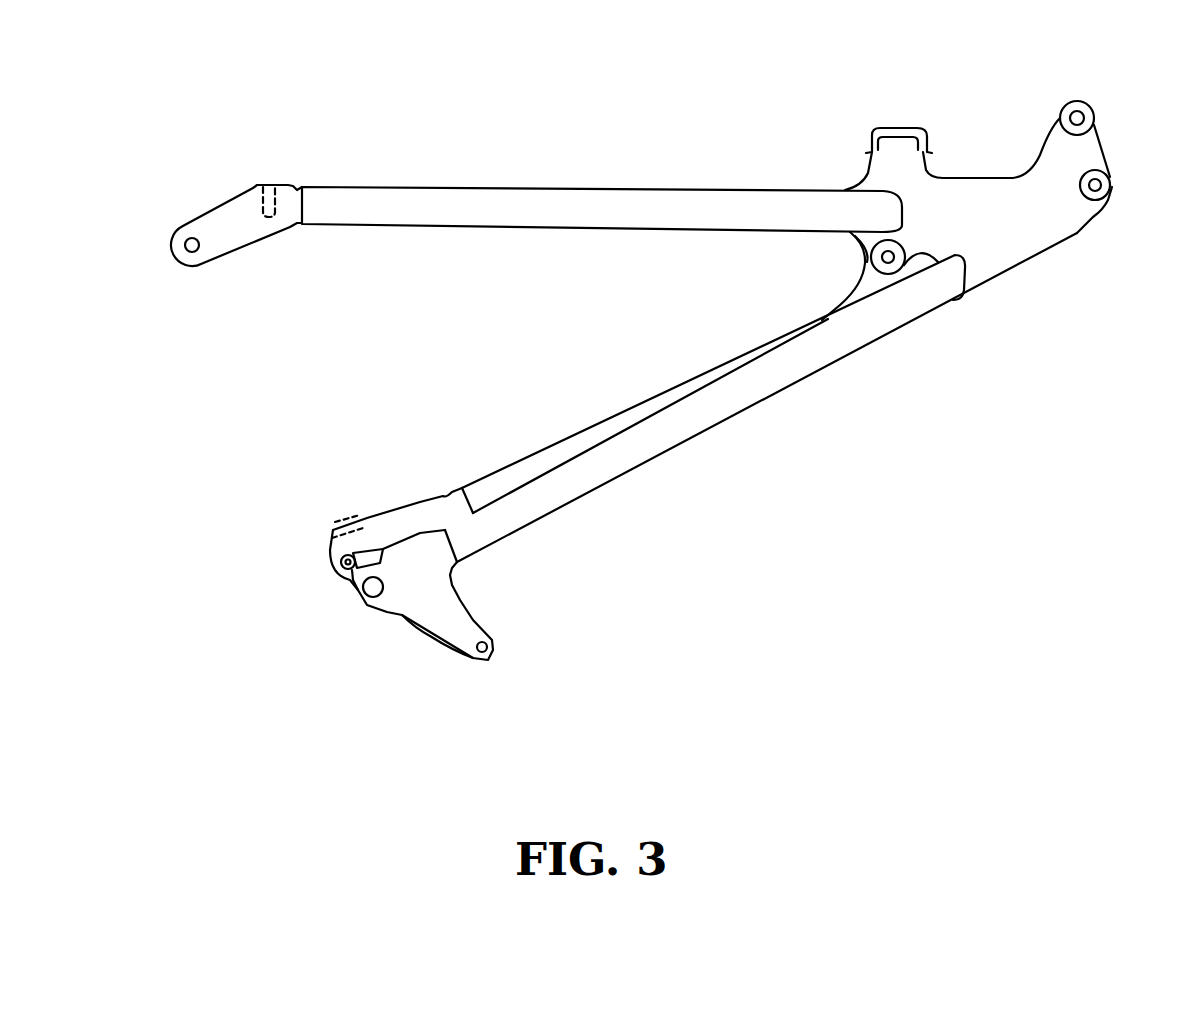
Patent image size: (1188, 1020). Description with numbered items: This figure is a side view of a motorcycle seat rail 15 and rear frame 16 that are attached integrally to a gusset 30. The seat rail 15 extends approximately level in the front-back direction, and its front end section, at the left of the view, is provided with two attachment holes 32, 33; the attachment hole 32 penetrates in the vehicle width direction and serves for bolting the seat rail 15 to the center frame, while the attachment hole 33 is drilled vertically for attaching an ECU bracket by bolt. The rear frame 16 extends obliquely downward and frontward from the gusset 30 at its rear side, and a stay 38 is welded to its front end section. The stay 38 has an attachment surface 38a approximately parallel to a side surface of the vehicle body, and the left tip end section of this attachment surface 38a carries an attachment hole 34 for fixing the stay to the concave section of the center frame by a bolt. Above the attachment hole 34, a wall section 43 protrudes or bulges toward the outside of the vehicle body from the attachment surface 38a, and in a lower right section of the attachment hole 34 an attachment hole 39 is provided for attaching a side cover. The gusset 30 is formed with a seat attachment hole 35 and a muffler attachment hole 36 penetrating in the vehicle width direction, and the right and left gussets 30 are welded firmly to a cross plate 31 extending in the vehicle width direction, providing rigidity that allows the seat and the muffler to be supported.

The seat rail 15 is at (547, 194).
The rear frame 16 is at (708, 374).
The gusset 30 is at (1060, 220).
The cross plate 31 is at (898, 137).
The attachment hole 32 is at (189, 250).
The attachment hole 33 is at (268, 186).
The attachment hole 34 is at (343, 559).
The seat attachment hole 35 is at (1082, 115).
The muffler attachment hole 36 is at (890, 260).
The stay 38 is at (453, 628).
The attachment surface 38a is at (420, 609).
The attachment hole 39 is at (487, 655).
The wall section 43 is at (370, 555).